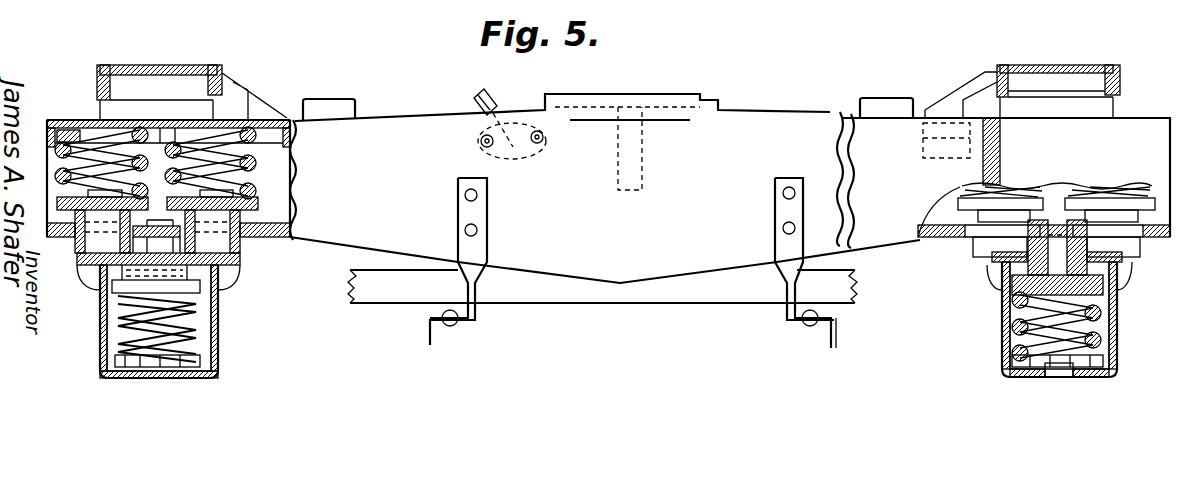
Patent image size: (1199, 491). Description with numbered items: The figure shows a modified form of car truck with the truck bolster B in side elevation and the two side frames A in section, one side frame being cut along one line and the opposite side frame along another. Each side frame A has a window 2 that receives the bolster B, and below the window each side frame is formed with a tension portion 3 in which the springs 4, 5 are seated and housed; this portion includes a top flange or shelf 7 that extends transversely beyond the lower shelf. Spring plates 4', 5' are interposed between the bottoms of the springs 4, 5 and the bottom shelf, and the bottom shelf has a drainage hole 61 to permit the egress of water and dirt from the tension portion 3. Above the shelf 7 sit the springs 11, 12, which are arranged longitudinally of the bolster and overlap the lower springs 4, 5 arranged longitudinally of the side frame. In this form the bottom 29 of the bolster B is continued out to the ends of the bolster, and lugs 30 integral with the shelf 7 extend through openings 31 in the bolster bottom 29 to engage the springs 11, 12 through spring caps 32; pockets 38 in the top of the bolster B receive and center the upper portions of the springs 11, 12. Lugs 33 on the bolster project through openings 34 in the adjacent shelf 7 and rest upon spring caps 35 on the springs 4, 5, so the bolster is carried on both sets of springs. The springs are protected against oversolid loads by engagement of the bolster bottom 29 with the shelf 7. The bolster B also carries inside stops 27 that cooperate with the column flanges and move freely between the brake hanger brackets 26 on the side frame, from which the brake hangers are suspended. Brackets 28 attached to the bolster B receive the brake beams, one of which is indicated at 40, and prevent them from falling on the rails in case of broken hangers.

The side frame A is at (602, 50).
The truck bolster B is at (570, 194).
The window 2 is at (102, 108).
The tension portion 3 is at (207, 358).
The spring 4 is at (184, 329).
The spring plate 4' is at (150, 382).
The spring 5 is at (1076, 326).
The spring plate 5' is at (1071, 380).
The top flange or shelf 7 is at (100, 266).
The spring 11 is at (62, 176).
The spring 12 is at (287, 163).
The brake hanger bracket 26 is at (277, 108).
The inside stop 27 is at (1000, 143).
The bracket 28 is at (428, 333).
The bolster bottom 29 is at (293, 240).
The lug 30 is at (77, 249).
The opening 31 is at (48, 229).
The spring cap 32 is at (57, 203).
The lug 33 is at (147, 273).
The opening 34 is at (990, 265).
The spring cap 35 is at (200, 288).
The pocket 38 is at (62, 133).
The brake beam 40 is at (620, 297).
The drainage hole 61 is at (1060, 374).